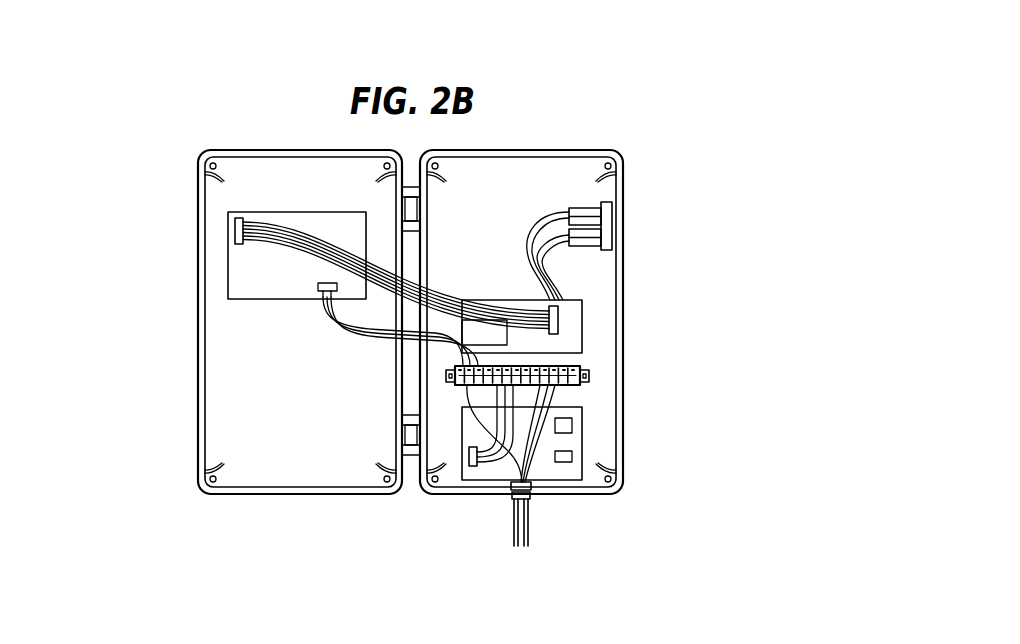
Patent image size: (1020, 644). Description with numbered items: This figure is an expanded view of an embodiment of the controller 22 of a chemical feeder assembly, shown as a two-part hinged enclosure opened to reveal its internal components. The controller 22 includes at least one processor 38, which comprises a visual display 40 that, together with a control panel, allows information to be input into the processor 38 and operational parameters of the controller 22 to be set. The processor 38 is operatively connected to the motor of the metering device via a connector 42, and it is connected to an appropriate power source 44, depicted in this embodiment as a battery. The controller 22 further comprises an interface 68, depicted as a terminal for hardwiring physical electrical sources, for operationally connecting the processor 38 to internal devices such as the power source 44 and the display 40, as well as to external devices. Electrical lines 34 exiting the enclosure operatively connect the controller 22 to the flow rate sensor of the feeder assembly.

The controller 22 is at (178, 192).
The visual display 40 is at (243, 272).
The connector 42 is at (607, 222).
The processor 38 is at (572, 322).
The interface 68 is at (590, 363).
The power source 44 is at (572, 442).
The electrical lines 34 is at (530, 522).